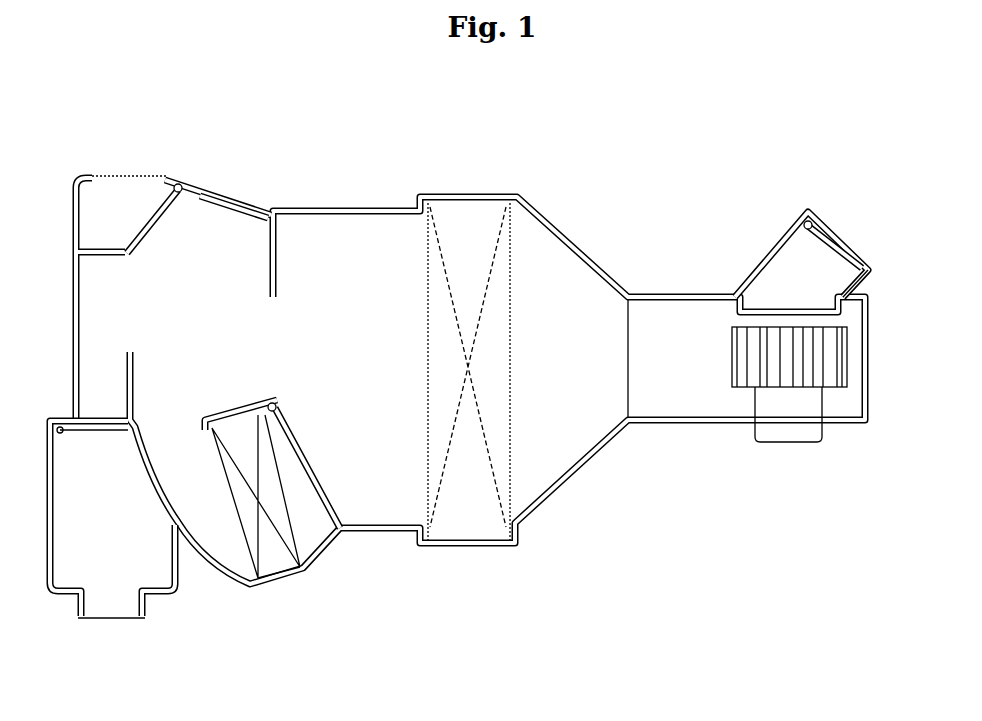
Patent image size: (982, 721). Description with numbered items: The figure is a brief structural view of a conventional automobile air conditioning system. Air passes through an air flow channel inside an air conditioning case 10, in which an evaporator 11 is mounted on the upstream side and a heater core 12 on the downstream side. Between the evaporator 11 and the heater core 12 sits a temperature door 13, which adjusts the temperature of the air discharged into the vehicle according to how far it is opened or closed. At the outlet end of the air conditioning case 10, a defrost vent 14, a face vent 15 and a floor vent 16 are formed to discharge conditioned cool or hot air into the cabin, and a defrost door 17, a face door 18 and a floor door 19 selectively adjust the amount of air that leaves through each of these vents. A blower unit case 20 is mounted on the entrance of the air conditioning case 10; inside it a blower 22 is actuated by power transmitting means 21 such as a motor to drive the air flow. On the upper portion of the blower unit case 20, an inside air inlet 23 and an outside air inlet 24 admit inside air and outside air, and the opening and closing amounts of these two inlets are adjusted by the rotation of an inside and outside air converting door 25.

The air conditioning case 10 is at (460, 190).
The evaporator 11 is at (503, 432).
The heater core 12 is at (290, 572).
The temperature door 13 is at (313, 468).
The defrost vent 14 is at (232, 194).
The face vent 15 is at (132, 175).
The floor vent 16 is at (110, 607).
The defrost door 17 is at (218, 212).
The face door 18 is at (147, 233).
The floor door 19 is at (100, 438).
The blower unit case 20 is at (668, 294).
The power transmitting means 21 is at (790, 428).
The blower 22 is at (752, 370).
The inside air inlet 23 is at (830, 230).
The outside air inlet 24 is at (768, 250).
The inside and outside air converting door 25 is at (850, 240).